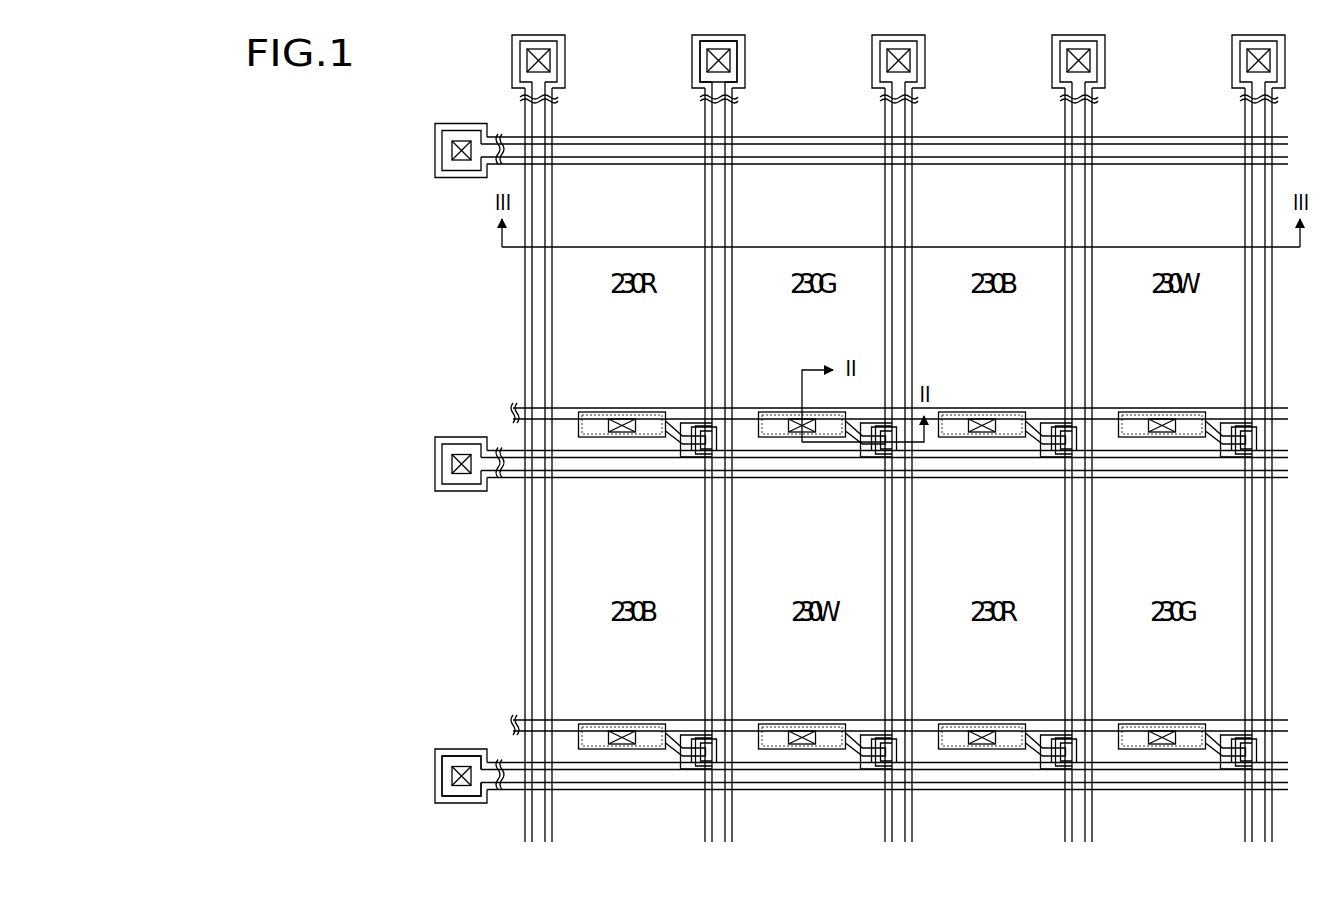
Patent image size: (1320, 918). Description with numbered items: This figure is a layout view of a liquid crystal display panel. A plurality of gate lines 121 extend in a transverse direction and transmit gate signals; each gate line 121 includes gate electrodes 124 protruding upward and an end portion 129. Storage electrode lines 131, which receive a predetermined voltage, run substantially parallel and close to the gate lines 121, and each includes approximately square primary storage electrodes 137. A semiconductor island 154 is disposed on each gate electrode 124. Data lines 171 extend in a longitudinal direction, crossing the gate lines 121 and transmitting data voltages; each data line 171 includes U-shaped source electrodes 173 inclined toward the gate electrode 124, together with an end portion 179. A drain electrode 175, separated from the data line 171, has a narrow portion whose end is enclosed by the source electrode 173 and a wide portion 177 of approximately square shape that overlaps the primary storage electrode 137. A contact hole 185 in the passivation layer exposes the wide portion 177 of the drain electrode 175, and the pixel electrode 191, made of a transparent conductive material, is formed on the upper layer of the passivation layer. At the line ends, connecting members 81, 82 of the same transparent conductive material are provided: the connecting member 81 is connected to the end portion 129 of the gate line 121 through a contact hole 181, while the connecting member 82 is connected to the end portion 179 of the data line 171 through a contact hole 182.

The connecting member 81 is at (440, 802).
The connecting member 82 is at (745, 61).
The gate line 121 is at (598, 790).
The gate electrode 124 is at (692, 739).
The end portion 129 is at (481, 800).
The storage electrode line 131 is at (690, 408).
The primary storage electrode 137 is at (600, 440).
The semiconductor island 154 is at (686, 424).
The data line 171 is at (705, 557).
The source electrode 173 is at (693, 460).
The drain electrode 175 is at (676, 450).
The wide portion 177 is at (598, 412).
The end portion 179 is at (745, 46).
The contact hole 181 is at (460, 787).
The contact hole 182 is at (729, 66).
The contact hole 185 is at (802, 731).
The pixel electrode 191 is at (705, 583).